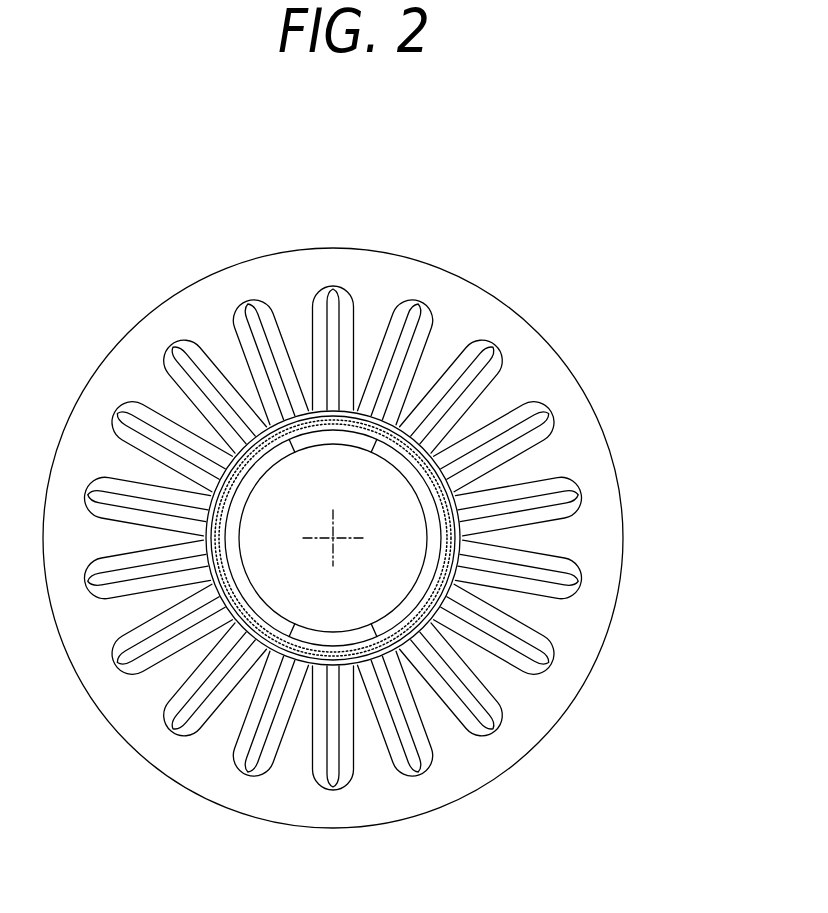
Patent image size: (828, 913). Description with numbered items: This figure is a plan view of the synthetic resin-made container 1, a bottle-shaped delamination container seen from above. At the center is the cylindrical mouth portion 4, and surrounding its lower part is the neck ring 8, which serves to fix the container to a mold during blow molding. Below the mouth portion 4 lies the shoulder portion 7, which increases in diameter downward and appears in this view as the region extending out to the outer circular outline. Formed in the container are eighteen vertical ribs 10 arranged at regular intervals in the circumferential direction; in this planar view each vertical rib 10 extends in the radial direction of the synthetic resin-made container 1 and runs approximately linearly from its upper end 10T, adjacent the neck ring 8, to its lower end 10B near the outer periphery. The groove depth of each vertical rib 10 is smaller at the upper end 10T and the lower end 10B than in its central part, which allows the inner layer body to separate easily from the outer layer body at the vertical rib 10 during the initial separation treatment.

The synthetic resin-made container 1 is at (603, 292).
The mouth portion 4 is at (337, 630).
The shoulder portion 7 is at (542, 460).
The neck ring 8 is at (395, 427).
The vertical rib 10 is at (505, 433).
The lower end 10B is at (547, 405).
The upper end 10T is at (427, 482).